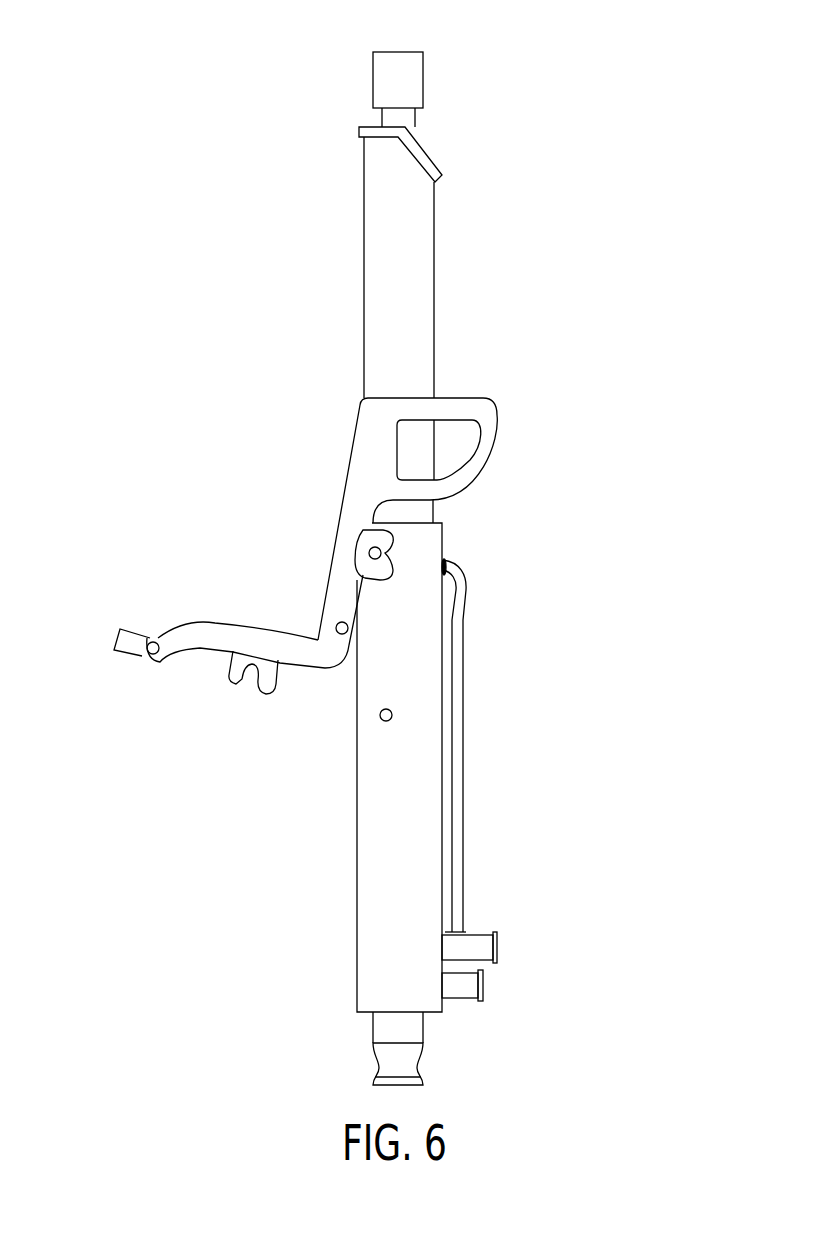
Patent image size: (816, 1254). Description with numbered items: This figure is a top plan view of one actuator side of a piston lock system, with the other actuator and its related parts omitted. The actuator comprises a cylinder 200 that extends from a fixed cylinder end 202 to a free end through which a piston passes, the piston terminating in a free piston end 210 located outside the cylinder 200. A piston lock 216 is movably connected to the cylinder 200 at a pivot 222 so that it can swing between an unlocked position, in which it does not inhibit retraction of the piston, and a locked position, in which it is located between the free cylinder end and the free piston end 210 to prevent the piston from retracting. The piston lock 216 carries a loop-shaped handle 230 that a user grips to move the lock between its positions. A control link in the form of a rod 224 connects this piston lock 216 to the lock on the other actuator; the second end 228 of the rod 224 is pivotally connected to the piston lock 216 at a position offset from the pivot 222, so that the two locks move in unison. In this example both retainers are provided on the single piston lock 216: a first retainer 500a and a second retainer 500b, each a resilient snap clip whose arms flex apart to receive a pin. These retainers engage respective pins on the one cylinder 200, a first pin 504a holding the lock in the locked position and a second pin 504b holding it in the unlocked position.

The free piston end 210 is at (399, 52).
The piston lock 216 is at (405, 262).
The handle 230 is at (490, 403).
The cylinder 200 is at (357, 847).
The fixed cylinder end 202 is at (400, 1058).
The first retainer 500a is at (358, 542).
The second retainer 500b is at (233, 675).
The first pin 504a is at (390, 555).
The second pin 504b is at (383, 722).
The pivot 222 is at (342, 622).
The second end of the rod 228 is at (151, 642).
The rod 224 is at (125, 652).